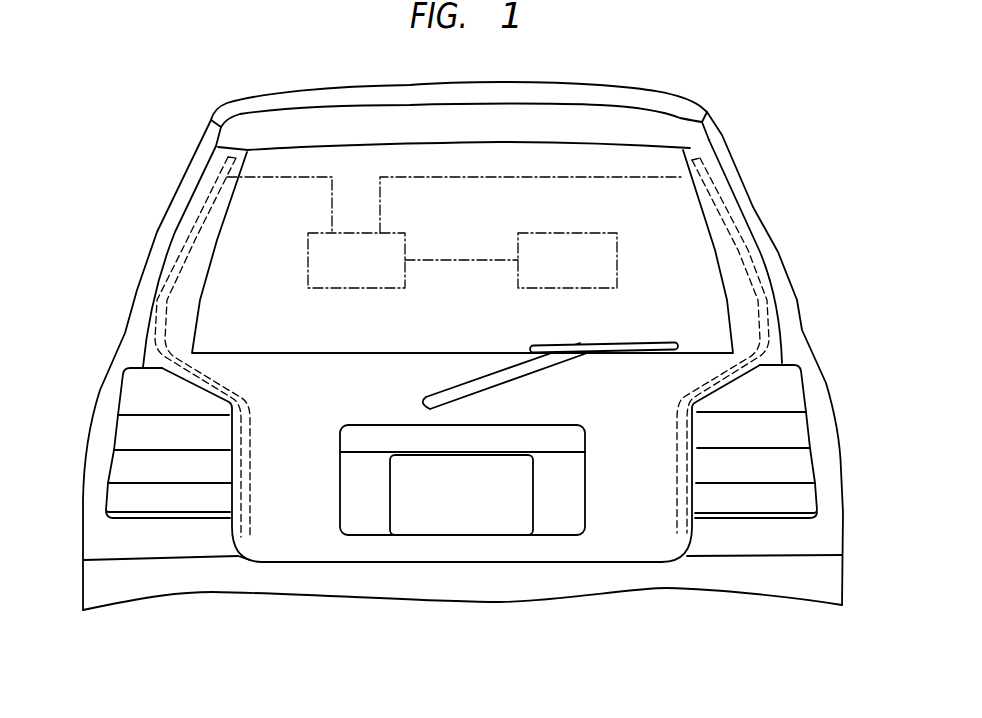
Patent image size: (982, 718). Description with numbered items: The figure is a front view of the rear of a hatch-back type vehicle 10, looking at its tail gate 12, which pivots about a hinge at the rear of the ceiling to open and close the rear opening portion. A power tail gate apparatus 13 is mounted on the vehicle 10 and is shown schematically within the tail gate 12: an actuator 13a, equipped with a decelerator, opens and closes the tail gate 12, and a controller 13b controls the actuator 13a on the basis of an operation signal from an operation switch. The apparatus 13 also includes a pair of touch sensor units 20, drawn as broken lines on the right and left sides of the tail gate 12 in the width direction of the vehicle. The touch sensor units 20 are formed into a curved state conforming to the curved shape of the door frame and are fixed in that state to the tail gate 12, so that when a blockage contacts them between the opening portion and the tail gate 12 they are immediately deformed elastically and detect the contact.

The vehicle 10 is at (745, 151).
The tail gate 12 is at (628, 487).
The power tail gate apparatus 13 is at (426, 172).
The actuator 13a is at (617, 260).
The controller 13b is at (307, 262).
The touch sensor units 20 is at (153, 316).